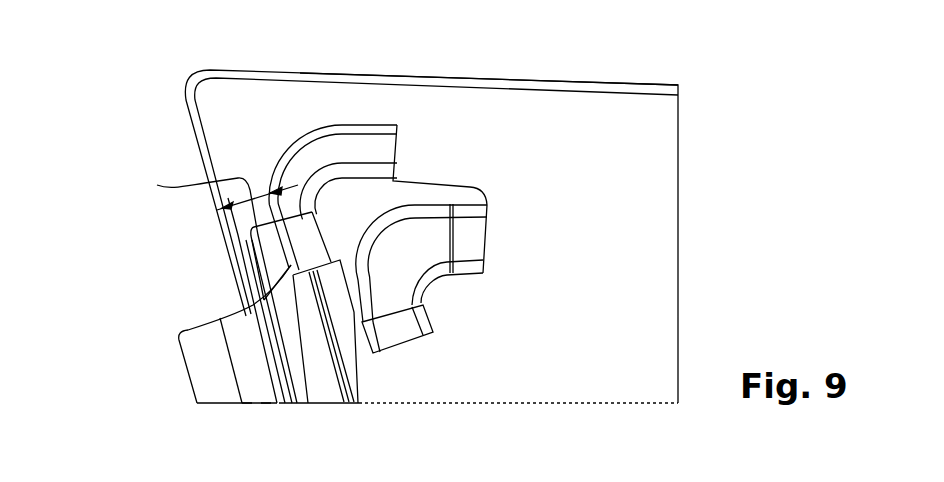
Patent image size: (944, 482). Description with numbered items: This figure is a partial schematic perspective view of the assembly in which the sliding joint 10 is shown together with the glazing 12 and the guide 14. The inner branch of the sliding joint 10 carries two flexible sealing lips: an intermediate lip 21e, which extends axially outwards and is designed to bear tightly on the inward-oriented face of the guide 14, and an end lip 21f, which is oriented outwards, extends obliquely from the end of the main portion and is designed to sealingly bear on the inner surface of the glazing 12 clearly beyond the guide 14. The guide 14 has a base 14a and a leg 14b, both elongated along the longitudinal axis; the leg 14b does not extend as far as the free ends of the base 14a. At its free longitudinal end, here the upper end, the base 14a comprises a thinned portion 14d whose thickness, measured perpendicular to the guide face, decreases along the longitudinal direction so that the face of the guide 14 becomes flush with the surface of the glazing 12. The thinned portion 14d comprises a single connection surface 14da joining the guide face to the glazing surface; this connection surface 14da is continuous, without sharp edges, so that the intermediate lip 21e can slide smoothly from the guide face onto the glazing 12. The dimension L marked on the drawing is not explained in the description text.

The sliding joint 10 is at (383, 124).
The glazing 12 is at (517, 81).
The guide 14 is at (177, 329).
The base of the guide 14a is at (202, 389).
The leg of the guide 14b is at (232, 389).
The thinned portion 14d is at (244, 228).
The connection surface 14da is at (275, 262).
The intermediate lip 21e is at (329, 122).
The end lip 21f is at (473, 240).
The length L is at (157, 185).